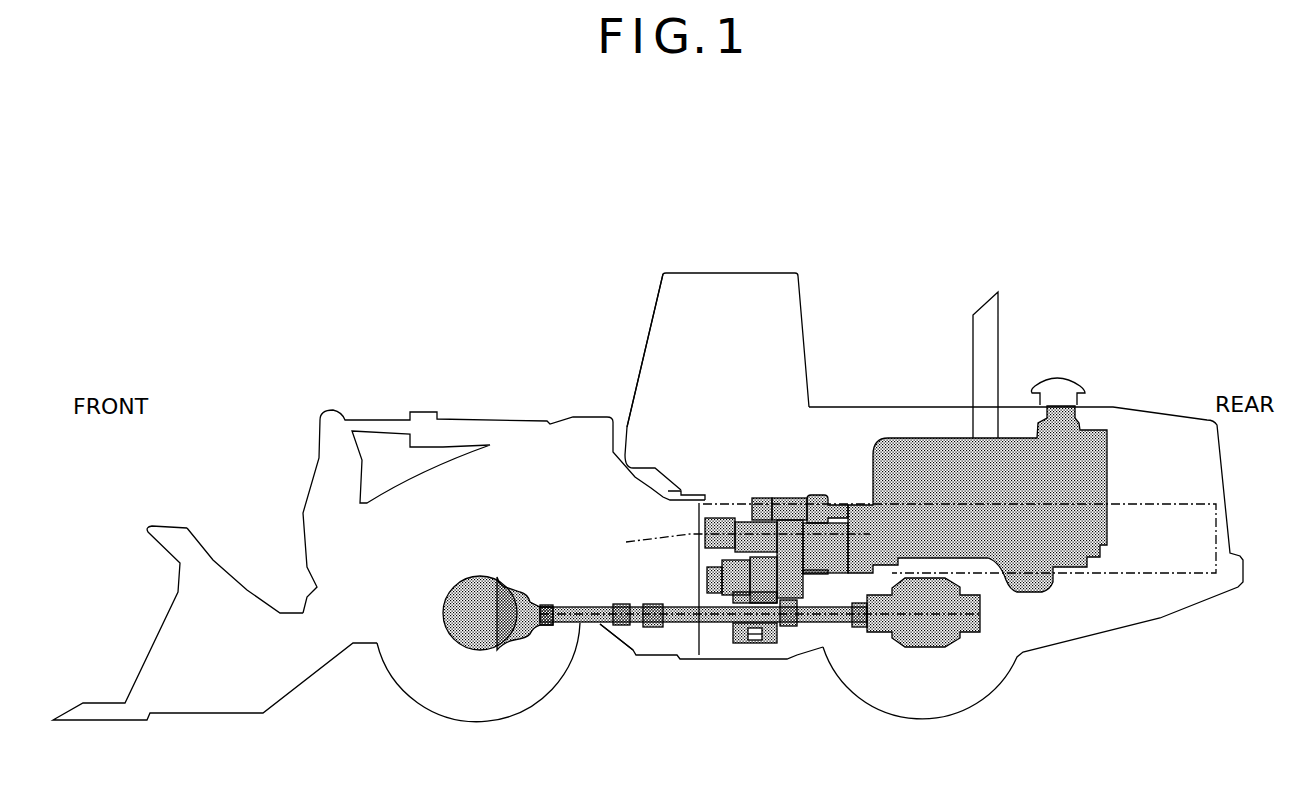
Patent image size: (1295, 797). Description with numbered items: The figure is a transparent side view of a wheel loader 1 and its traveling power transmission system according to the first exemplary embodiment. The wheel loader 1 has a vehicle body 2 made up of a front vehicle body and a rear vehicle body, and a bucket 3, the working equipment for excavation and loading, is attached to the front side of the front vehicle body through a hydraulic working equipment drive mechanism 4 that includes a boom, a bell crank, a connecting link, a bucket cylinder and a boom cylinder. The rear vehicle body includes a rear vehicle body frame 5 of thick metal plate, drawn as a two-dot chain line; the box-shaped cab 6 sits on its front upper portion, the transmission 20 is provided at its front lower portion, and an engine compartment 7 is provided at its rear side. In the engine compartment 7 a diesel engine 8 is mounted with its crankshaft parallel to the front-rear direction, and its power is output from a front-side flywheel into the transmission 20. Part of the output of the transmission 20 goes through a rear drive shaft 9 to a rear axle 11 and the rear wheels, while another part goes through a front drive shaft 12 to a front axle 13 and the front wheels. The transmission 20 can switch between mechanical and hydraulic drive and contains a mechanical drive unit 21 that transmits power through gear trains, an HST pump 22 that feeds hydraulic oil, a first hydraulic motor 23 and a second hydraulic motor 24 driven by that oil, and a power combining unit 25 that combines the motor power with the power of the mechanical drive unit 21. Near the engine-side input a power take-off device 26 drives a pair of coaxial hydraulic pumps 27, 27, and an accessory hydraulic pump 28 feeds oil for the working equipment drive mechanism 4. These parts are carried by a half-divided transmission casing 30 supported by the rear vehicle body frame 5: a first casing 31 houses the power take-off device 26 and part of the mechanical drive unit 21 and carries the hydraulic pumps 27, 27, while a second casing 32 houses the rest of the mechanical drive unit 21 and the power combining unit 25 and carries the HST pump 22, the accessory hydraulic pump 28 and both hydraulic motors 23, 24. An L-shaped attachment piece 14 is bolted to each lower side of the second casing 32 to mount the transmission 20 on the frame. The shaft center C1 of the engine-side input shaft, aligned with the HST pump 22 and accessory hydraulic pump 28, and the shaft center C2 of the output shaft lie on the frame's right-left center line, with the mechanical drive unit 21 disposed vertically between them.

The wheel loader 1 is at (912, 180).
The vehicle body 2 is at (865, 413).
The bucket 3 is at (210, 560).
The working equipment drive mechanism 4 is at (485, 388).
The rear vehicle body frame 5 is at (1103, 574).
The cab 6 is at (745, 273).
The engine compartment 7 is at (928, 423).
The engine 8 is at (1102, 459).
The rear drive shaft 9 is at (843, 617).
The rear axle 11 is at (923, 650).
The front drive shaft 12 is at (607, 632).
The front axle 13 is at (473, 652).
The attachment piece 14 is at (757, 642).
The transmission 20 is at (767, 437).
The mechanical drive unit 21 is at (800, 498).
The HST pump 22 is at (745, 518).
The first hydraulic motor 23 is at (705, 570).
The second hydraulic motor 24 is at (705, 578).
The power combining unit 25 is at (732, 640).
The power take-off device 26 is at (820, 493).
The hydraulic pumps 27 is at (763, 497).
The accessory hydraulic pump 28 is at (703, 525).
The transmission casing 30 is at (768, 717).
The first casing 31 is at (827, 573).
The second casing 32 is at (793, 600).
The shaft center C1 is at (733, 542).
The shaft center C2 is at (700, 635).